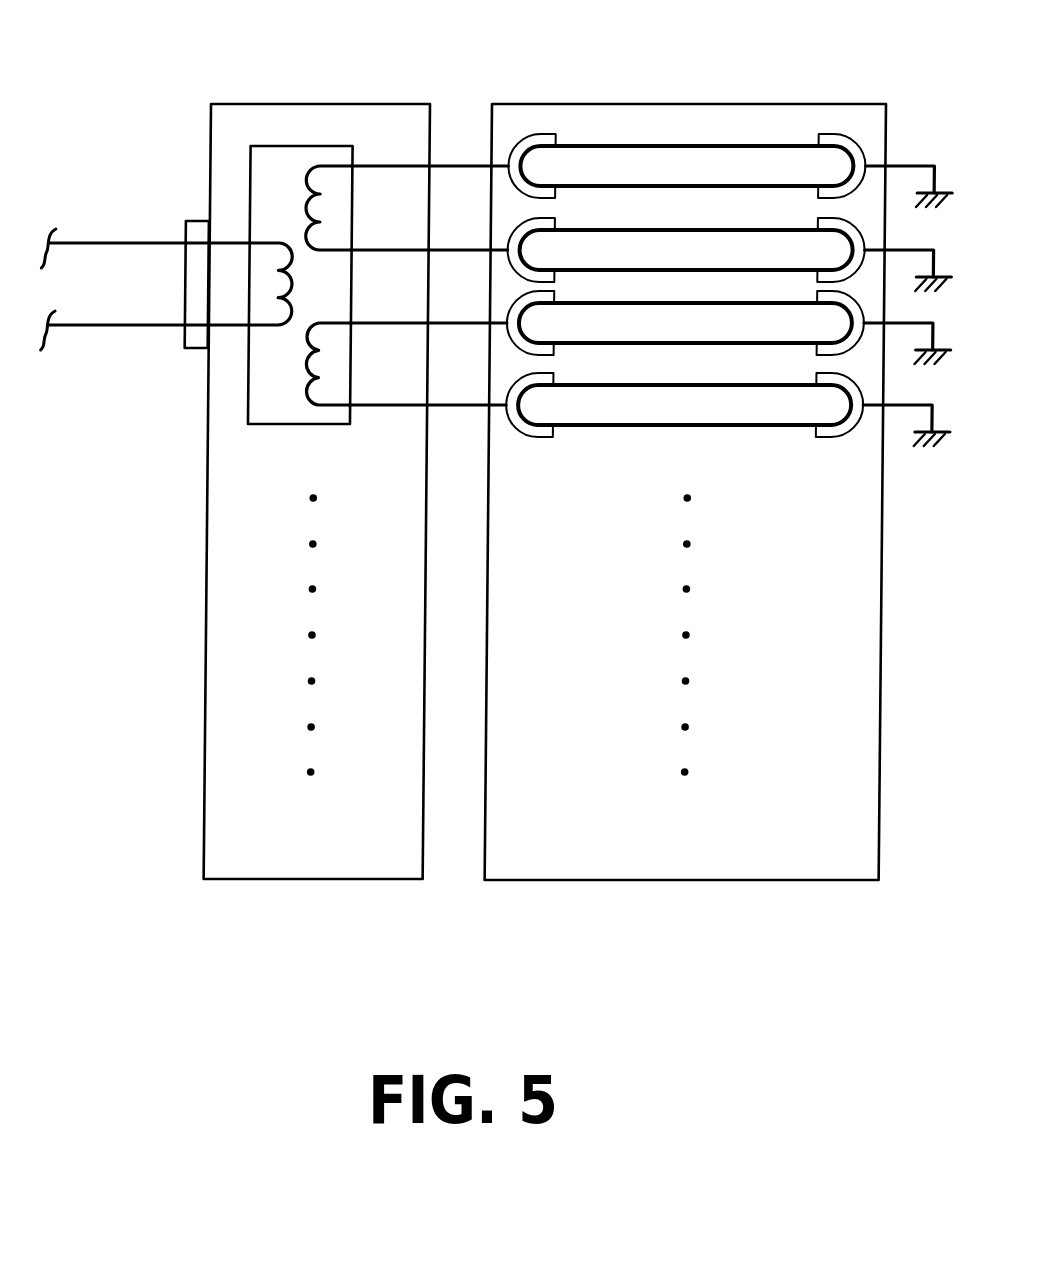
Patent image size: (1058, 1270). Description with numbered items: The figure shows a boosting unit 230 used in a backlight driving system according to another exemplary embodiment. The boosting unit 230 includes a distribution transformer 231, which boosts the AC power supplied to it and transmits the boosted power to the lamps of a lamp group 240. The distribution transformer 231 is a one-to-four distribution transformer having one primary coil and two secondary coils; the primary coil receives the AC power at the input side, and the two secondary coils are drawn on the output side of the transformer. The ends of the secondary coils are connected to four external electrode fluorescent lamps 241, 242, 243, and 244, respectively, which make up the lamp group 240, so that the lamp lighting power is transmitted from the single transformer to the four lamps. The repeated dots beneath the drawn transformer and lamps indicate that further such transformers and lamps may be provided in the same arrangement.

The boosting unit 230 is at (308, 879).
The distribution transformer 231 is at (282, 146).
The lamp group 240 is at (690, 881).
The external electrode fluorescent lamp 241 is at (662, 144).
The external electrode fluorescent lamp 242 is at (765, 228).
The external electrode fluorescent lamp 243 is at (755, 345).
The external electrode fluorescent lamp 244 is at (608, 427).